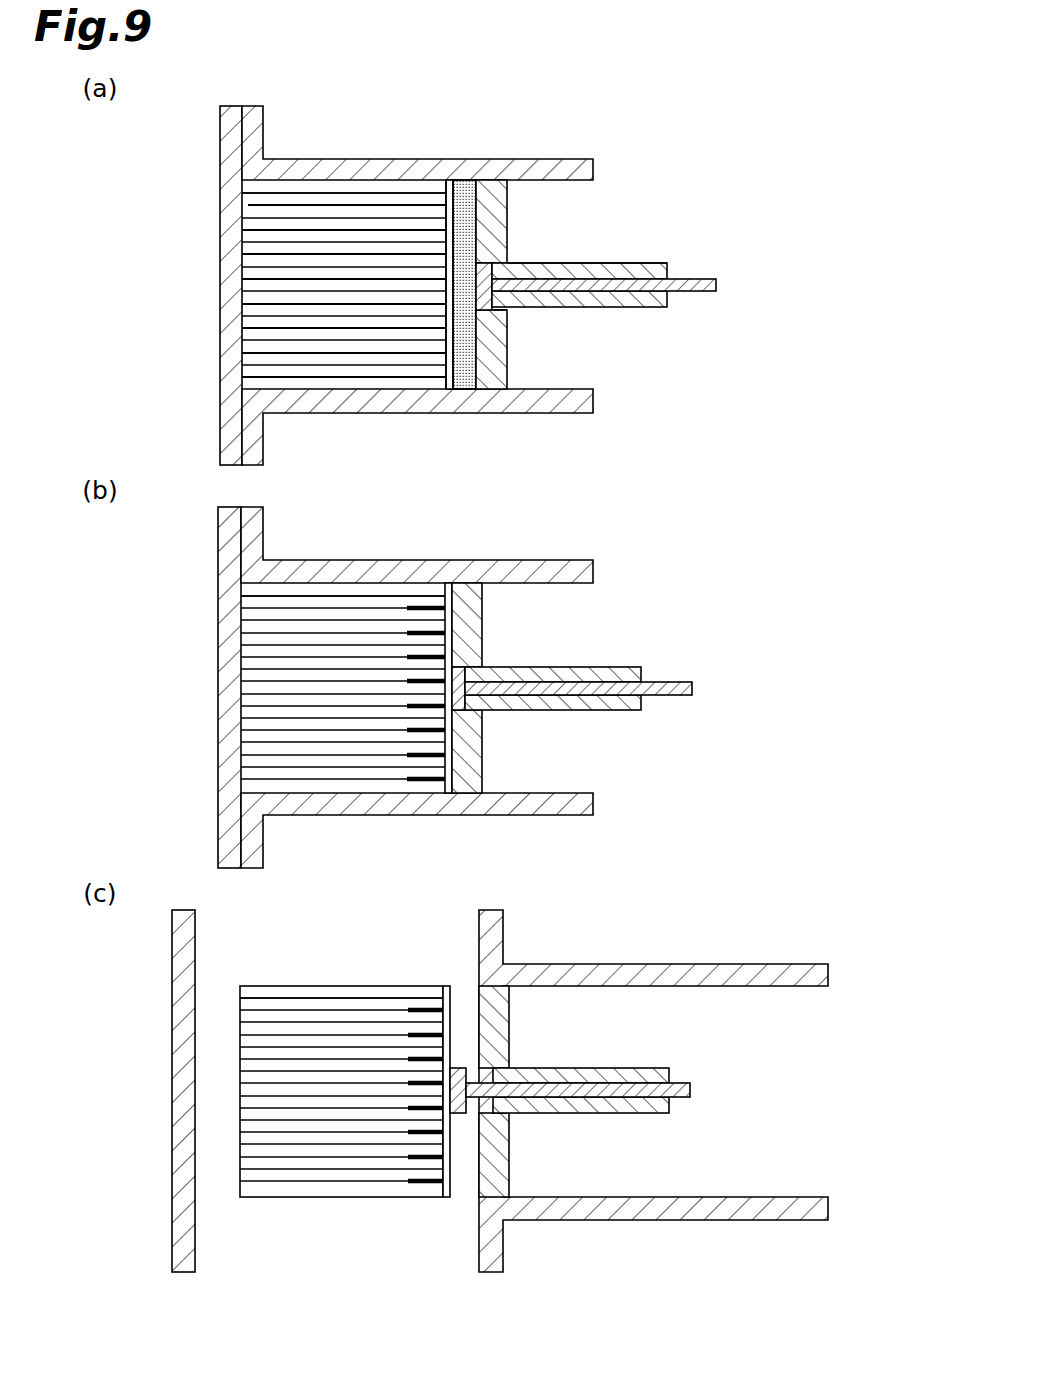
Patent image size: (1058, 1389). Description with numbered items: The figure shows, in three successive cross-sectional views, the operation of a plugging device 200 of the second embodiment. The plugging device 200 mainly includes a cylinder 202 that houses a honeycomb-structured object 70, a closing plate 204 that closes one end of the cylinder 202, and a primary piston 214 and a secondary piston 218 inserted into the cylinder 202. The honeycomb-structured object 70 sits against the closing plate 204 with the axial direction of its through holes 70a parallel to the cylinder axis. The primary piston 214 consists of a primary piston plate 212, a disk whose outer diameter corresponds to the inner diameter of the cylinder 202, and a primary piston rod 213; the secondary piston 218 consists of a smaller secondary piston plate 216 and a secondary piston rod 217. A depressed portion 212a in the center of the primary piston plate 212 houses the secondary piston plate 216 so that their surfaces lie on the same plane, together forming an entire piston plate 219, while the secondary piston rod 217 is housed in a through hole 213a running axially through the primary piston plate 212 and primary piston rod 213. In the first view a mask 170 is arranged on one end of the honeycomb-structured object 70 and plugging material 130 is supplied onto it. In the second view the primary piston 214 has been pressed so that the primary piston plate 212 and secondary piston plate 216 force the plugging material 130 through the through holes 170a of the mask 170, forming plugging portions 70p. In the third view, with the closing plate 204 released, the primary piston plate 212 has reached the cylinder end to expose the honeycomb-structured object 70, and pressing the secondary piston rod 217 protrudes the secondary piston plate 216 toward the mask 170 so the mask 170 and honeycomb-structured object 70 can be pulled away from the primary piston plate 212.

The honeycomb-structured object 70 is at (315, 183).
The through holes 70a is at (287, 191).
The plugging portions 70p is at (424, 607).
The plugging material 130 is at (464, 389).
The mask 170 is at (447, 386).
The through holes of the mask 170a is at (447, 352).
The plugging device 200 is at (645, 158).
The cylinder 202 is at (540, 168).
The closing plate 204 is at (230, 129).
The primary piston plate 212 is at (484, 222).
The depressed portion 212a is at (507, 312).
The primary piston rod 213 is at (535, 268).
The through hole 213a is at (640, 276).
The primary piston 214 is at (622, 193).
The secondary piston plate 216 is at (451, 266).
The secondary piston rod 217 is at (489, 293).
The secondary piston 218 is at (622, 308).
The entire piston plate 219 is at (497, 124).